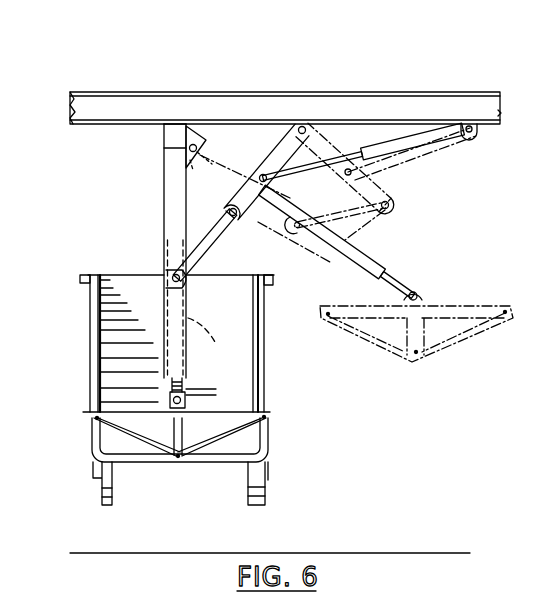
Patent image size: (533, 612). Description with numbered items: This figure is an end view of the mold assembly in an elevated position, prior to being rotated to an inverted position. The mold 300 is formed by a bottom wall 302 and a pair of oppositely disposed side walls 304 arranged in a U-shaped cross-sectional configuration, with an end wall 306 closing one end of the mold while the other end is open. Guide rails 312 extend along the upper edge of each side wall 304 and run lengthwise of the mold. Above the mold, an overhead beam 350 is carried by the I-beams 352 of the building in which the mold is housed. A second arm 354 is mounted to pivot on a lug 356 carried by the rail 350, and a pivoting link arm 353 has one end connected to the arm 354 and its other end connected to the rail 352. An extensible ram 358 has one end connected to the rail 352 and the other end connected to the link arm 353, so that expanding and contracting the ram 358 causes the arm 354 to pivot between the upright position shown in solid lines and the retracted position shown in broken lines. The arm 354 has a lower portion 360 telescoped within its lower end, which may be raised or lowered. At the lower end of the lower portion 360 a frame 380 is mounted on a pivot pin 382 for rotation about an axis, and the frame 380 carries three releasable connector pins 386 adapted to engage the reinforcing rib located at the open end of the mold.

The mold 300 is at (292, 378).
The bottom wall 302 is at (231, 449).
The side walls 304 is at (98, 352).
The end wall 306 is at (98, 320).
The guide rails 312 is at (79, 277).
The overhead beam 350 is at (166, 138).
The I-beams 352 is at (205, 105).
The pivoting link arm 353 is at (242, 208).
The second arm 354 is at (168, 197).
The lug 356 is at (205, 132).
The extensible ram 358 is at (412, 144).
The lower portion 360 is at (436, 272).
The frame 380 is at (265, 438).
The pivot pin 382 is at (230, 393).
The releasable connector pins 386 is at (97, 418).